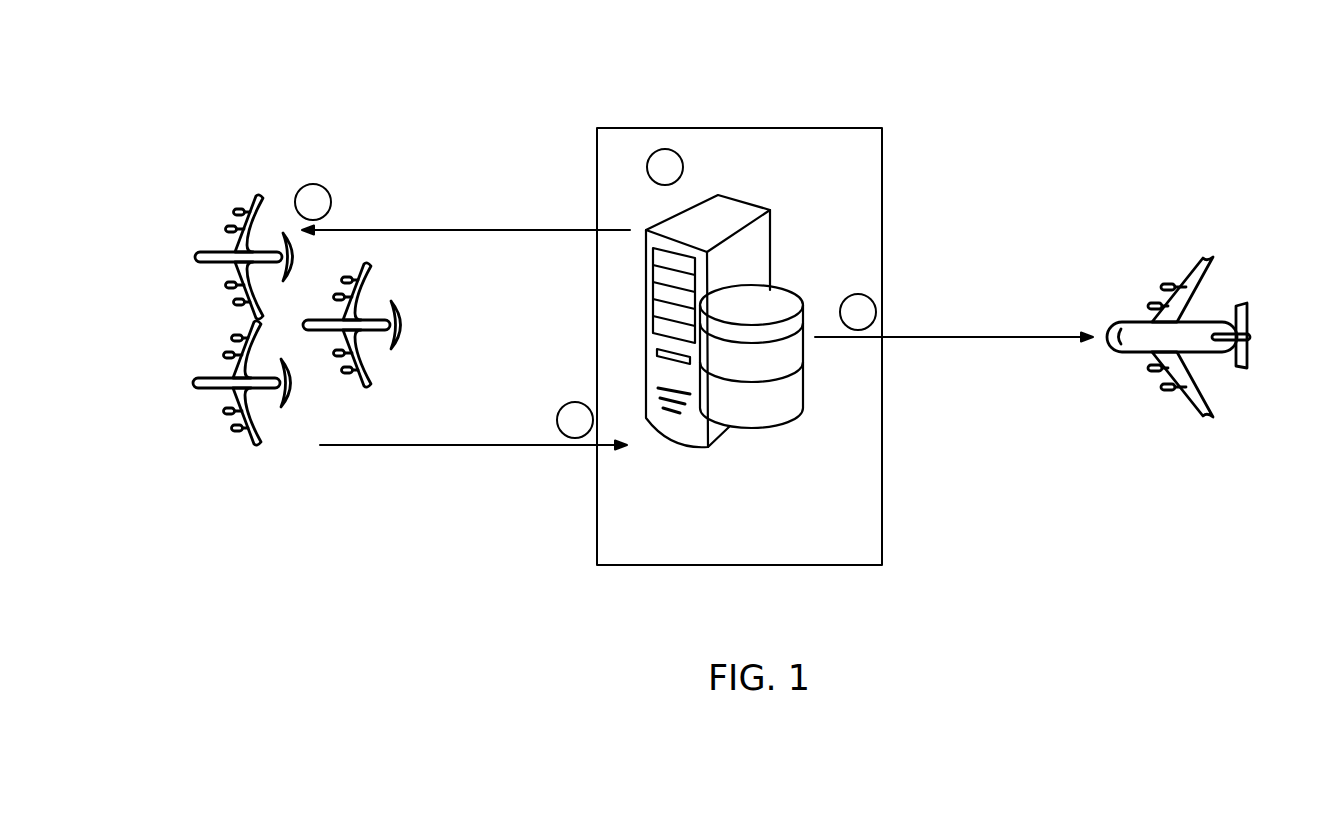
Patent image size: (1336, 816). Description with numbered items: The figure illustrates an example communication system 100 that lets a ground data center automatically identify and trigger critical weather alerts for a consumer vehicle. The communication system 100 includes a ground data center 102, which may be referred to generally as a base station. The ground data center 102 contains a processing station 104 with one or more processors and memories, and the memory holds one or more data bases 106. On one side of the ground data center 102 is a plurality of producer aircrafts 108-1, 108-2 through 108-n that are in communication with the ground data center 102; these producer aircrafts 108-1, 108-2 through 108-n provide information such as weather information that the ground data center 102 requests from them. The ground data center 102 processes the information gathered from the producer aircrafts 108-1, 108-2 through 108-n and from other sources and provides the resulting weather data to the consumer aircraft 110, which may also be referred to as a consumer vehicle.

The communication system 100 is at (995, 84).
The ground data center 102 is at (765, 549).
The processing station 104 is at (758, 233).
The data bases 106 is at (792, 397).
The producer aircraft 108-1 is at (207, 253).
The producer aircraft 108-2 is at (207, 390).
The producer aircraft 108-n is at (402, 321).
The consumer aircraft 110 is at (1218, 328).